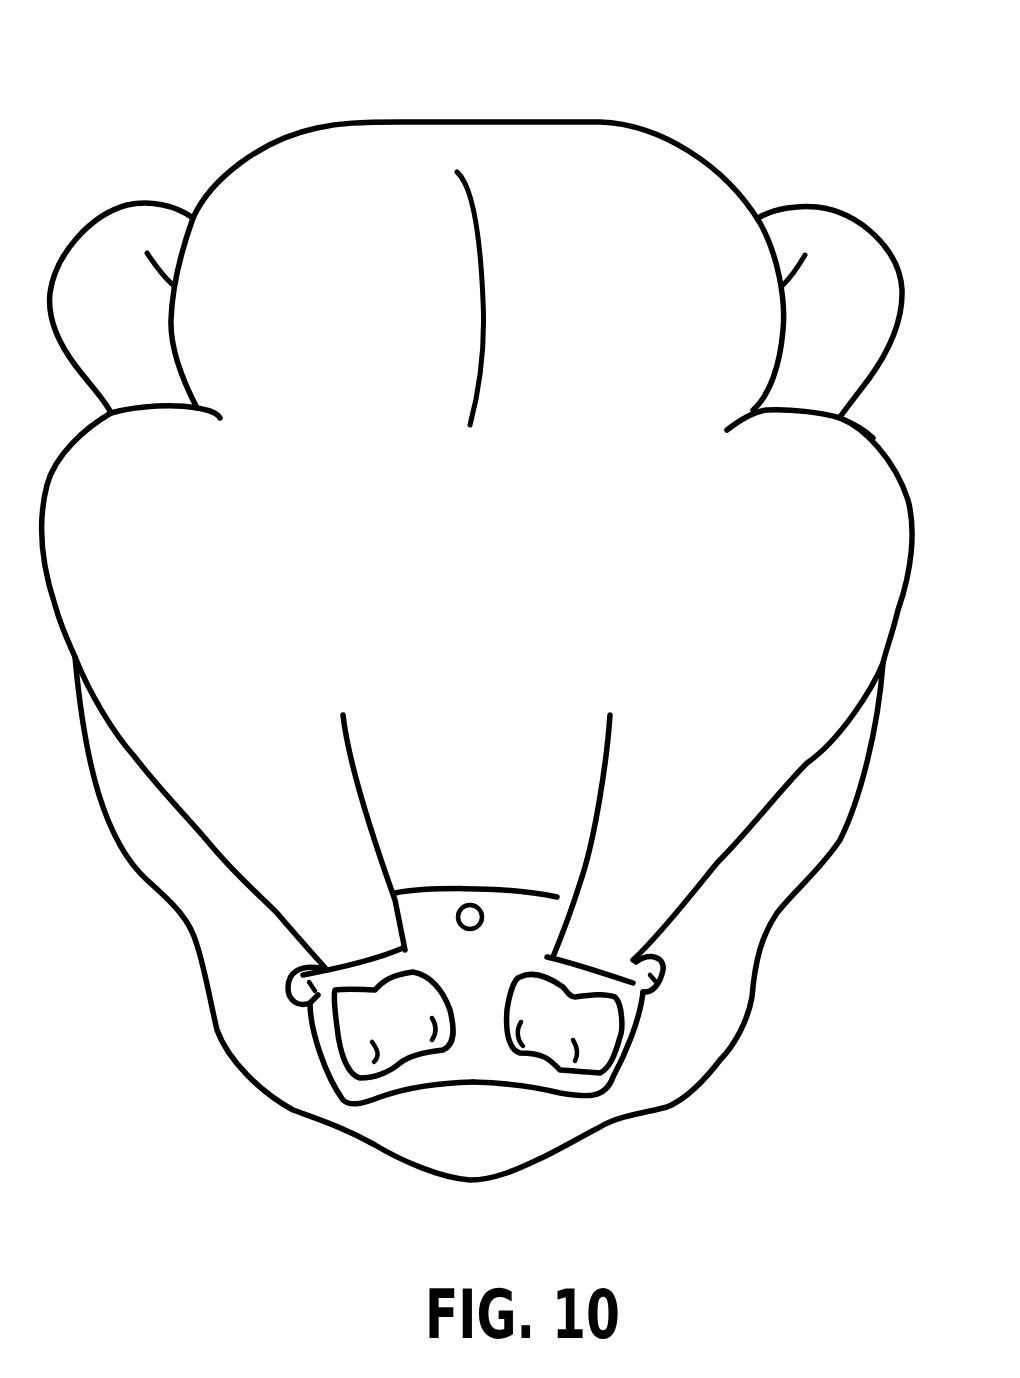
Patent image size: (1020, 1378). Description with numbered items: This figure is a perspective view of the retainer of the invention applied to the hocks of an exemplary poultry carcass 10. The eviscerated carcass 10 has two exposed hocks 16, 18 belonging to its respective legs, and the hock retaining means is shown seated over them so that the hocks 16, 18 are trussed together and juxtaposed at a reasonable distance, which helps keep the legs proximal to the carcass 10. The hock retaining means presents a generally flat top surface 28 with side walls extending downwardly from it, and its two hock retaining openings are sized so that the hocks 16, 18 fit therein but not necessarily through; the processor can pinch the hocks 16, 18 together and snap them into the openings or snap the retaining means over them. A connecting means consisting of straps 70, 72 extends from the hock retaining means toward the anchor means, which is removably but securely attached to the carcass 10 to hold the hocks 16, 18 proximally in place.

The poultry carcass 10 is at (561, 207).
The hock 16 is at (430, 1037).
The hock 18 is at (600, 1063).
The top surface 28 is at (498, 950).
The strap 70 is at (293, 983).
The strap 72 is at (660, 977).